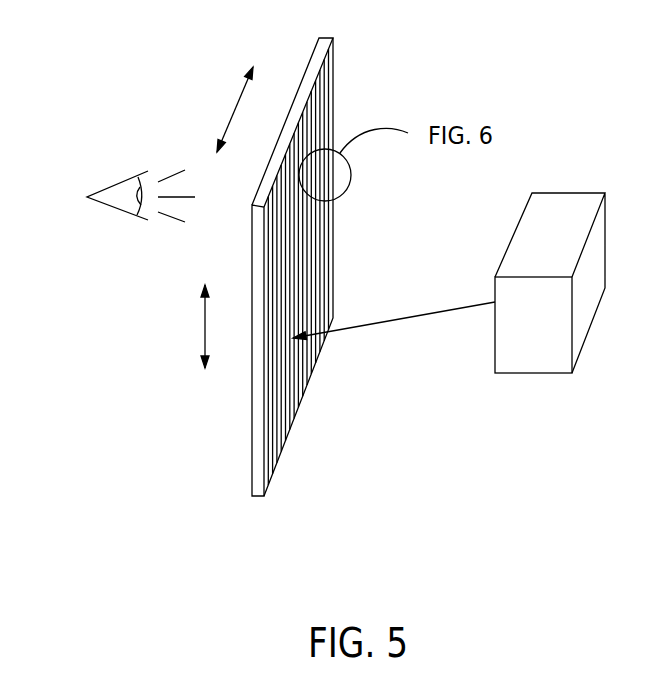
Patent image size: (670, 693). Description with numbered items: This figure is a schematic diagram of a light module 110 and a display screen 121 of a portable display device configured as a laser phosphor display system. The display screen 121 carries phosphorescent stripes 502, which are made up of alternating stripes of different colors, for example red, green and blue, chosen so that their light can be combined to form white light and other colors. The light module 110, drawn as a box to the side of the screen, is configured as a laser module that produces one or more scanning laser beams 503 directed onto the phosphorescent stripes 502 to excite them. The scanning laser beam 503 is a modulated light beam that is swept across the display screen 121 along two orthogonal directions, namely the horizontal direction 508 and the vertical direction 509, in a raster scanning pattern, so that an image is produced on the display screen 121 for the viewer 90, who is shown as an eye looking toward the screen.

The horizontal direction 508 is at (230, 112).
The vertical direction 509 is at (205, 332).
The viewer 90 is at (112, 207).
The display screen 121 is at (253, 423).
The phosphorescent stripes 502 is at (298, 363).
The scanning laser beam 503 is at (400, 322).
The light module 110 is at (553, 337).